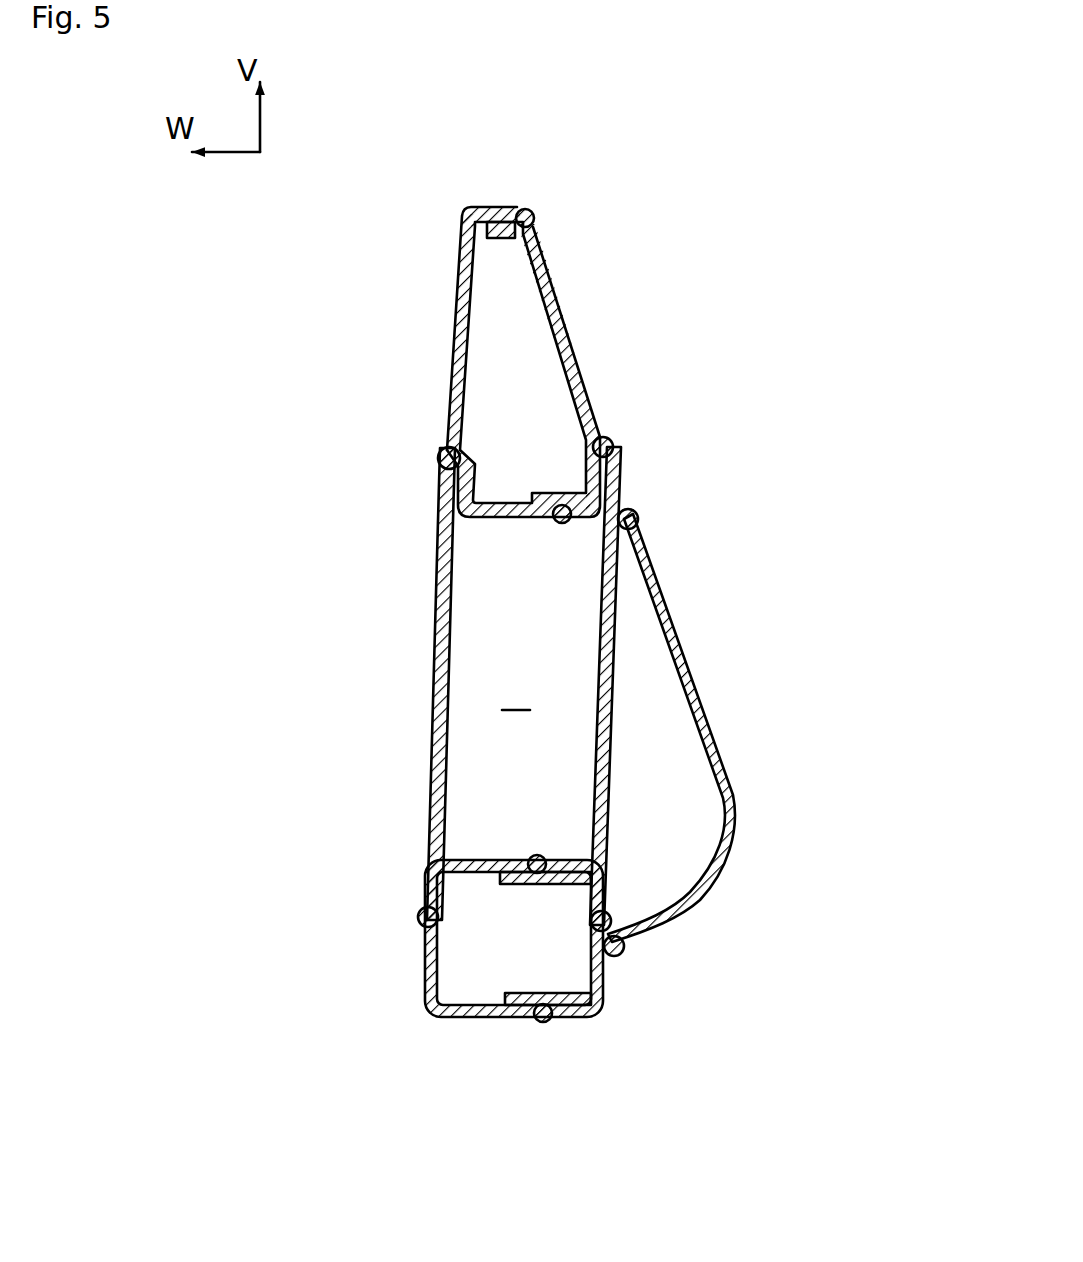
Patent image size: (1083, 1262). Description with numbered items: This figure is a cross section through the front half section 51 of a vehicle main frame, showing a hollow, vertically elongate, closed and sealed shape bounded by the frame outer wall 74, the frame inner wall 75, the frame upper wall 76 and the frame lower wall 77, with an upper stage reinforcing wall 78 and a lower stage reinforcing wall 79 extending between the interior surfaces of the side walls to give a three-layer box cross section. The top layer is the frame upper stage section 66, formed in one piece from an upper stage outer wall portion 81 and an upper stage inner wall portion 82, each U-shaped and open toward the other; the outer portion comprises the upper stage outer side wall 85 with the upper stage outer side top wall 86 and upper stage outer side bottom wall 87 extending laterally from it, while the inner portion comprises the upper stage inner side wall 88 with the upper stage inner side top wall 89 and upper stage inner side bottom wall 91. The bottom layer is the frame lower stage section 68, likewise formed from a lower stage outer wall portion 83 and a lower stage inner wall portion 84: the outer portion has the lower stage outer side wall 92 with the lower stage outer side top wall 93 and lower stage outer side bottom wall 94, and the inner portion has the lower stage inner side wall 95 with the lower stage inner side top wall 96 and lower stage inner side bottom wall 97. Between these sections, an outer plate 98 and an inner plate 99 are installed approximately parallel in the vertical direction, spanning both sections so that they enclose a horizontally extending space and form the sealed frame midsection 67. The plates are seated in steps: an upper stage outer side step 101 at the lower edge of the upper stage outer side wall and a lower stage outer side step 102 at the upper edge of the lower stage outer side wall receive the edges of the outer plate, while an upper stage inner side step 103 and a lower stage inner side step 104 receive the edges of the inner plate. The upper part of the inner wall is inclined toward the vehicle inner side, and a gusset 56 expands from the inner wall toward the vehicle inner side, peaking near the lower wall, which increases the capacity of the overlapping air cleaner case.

The front half section 51 is at (720, 96).
The gusset 56 is at (688, 629).
The frame upper stage section 66 is at (426, 289).
The frame midsection 67 is at (426, 697).
The frame lower stage section 68 is at (395, 963).
The frame outer wall 74 is at (245, 395).
The frame inner wall 75 is at (802, 380).
The frame upper wall 76 is at (558, 112).
The frame lower wall 77 is at (600, 1098).
The upper stage reinforcing wall 78 is at (590, 595).
The lower stage reinforcing wall 79 is at (578, 788).
The upper stage outer wall portion 81 is at (446, 338).
The upper stage inner wall portion 82 is at (601, 299).
The lower stage outer wall portion 83 is at (418, 985).
The lower stage inner wall portion 84 is at (617, 994).
The upper stage outer side wall 85 is at (447, 400).
The upper stage outer side top wall 86 is at (497, 212).
The upper stage outer side bottom wall 87 is at (507, 520).
The upper stage inner side wall 88 is at (578, 361).
The upper stage inner side top wall 89 is at (505, 212).
The upper stage inner side bottom wall 91 is at (562, 523).
The lower stage outer side wall 92 is at (425, 957).
The lower stage outer side top wall 93 is at (498, 860).
The lower stage outer side bottom wall 94 is at (500, 1018).
The lower stage inner side wall 95 is at (610, 978).
The lower stage inner side top wall 96 is at (557, 873).
The lower stage inner side bottom wall 97 is at (568, 1008).
The outer plate 98 is at (431, 551).
The inner plate 99 is at (624, 489).
The upper stage outer side step 101 is at (445, 483).
The lower stage outer side step 102 is at (436, 900).
The upper stage inner side step 103 is at (610, 456).
The lower stage inner side step 104 is at (607, 910).